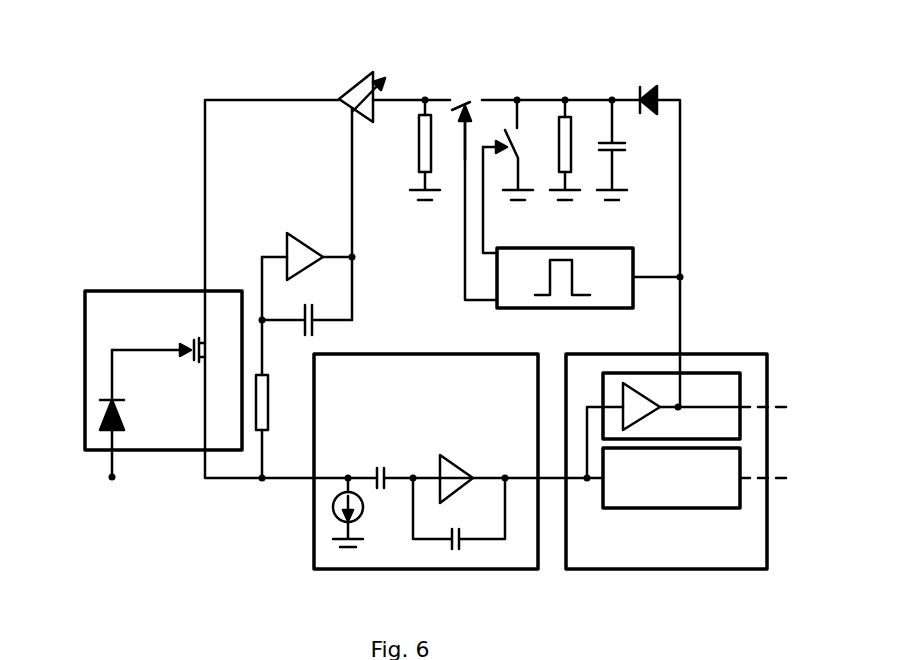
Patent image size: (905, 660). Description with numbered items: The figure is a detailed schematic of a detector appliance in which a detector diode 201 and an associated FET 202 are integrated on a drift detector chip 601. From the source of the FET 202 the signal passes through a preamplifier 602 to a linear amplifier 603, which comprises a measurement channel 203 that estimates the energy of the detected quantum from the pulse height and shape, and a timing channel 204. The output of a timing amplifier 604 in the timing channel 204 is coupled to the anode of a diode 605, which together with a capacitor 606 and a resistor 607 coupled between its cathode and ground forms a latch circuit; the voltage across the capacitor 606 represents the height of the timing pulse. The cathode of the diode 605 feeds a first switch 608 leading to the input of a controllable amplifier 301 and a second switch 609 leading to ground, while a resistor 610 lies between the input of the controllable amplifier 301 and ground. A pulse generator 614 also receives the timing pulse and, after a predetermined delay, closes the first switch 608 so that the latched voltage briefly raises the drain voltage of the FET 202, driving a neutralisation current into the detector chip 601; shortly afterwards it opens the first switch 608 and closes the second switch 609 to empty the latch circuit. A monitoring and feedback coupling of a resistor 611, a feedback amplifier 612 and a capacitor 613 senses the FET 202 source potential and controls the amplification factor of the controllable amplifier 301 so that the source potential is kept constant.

The controllable amplifier 301 is at (357, 87).
The drift detector chip 601 is at (120, 291).
The detector diode 201 is at (100, 413).
The FET 202 is at (198, 362).
The resistor 611 is at (270, 388).
The feedback amplifier 612 is at (300, 241).
The capacitor 613 is at (310, 320).
The resistor 610 is at (436, 134).
The first switch 608 is at (453, 108).
The second switch 609 is at (519, 134).
The resistor 607 is at (573, 135).
The capacitor 606 is at (621, 141).
The diode 605 is at (648, 92).
The pulse generator 614 is at (600, 248).
The preamplifier 602 is at (332, 569).
The linear amplifier 603 is at (575, 569).
The timing amplifier 604 is at (642, 384).
The timing channel 204 is at (703, 373).
The measurement channel 203 is at (700, 508).